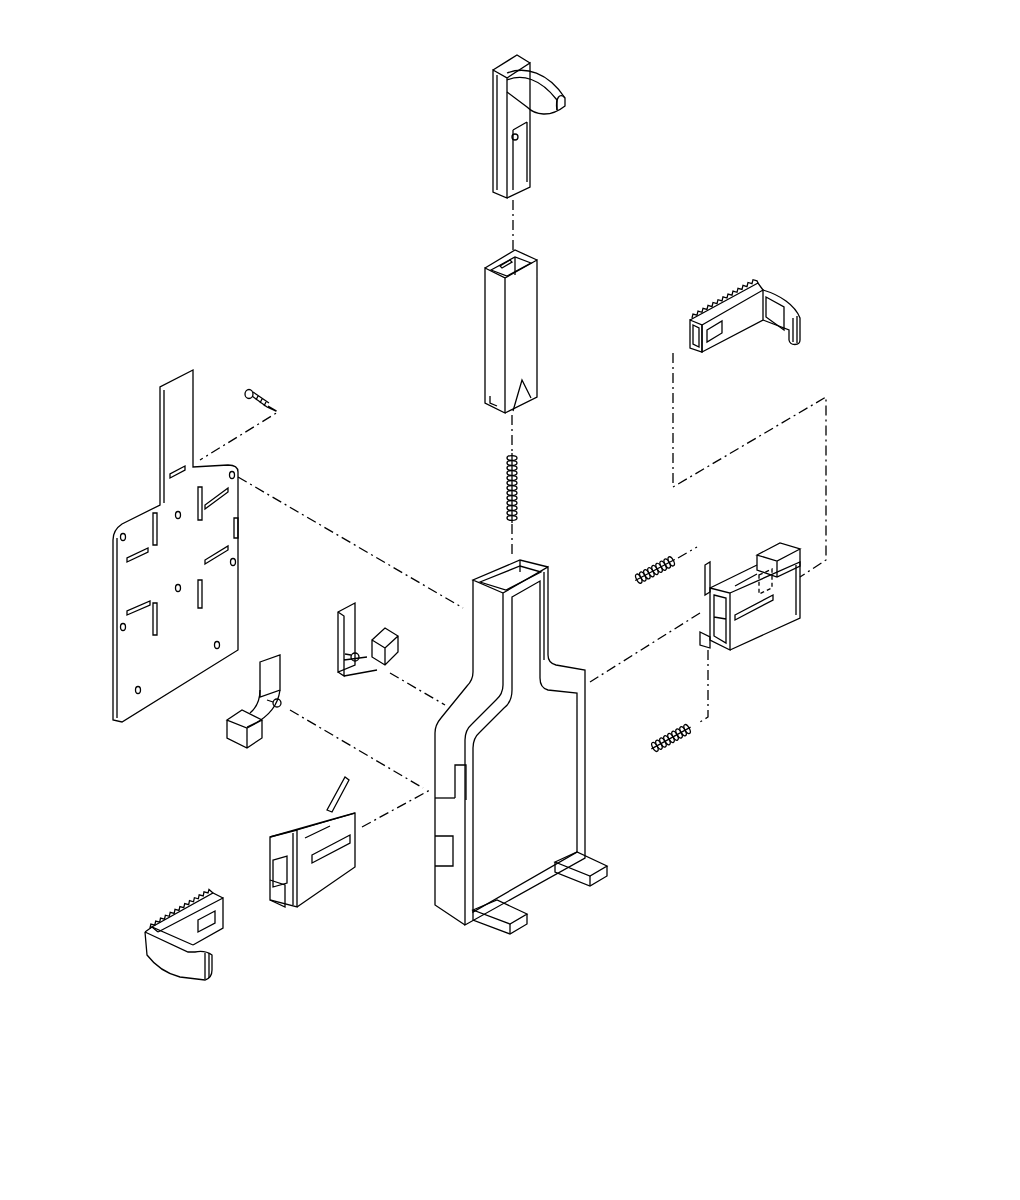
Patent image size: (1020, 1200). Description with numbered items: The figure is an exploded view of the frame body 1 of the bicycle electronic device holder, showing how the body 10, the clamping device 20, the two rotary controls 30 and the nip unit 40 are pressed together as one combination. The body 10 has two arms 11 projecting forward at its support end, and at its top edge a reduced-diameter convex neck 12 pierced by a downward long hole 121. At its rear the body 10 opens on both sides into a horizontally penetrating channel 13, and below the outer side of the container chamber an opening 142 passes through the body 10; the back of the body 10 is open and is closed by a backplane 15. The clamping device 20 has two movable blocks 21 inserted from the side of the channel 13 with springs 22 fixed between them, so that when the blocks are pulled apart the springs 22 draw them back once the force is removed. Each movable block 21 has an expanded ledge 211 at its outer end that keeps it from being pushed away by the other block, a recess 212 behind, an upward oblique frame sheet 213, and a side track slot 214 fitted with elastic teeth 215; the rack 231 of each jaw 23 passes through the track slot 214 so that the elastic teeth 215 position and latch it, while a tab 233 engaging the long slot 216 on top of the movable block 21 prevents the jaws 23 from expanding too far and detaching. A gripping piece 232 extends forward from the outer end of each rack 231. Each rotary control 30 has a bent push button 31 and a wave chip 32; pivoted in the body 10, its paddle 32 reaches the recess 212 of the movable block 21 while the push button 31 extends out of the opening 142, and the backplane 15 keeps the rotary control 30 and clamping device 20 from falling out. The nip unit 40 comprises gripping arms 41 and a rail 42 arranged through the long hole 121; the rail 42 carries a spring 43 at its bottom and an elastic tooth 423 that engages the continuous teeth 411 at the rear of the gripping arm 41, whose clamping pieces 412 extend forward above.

The frame body 1 is at (710, 150).
The body 10 is at (593, 777).
The arms 11 is at (607, 880).
The convex neck 12 is at (530, 645).
The long hole 121 is at (502, 568).
The channel 13 is at (455, 787).
The opening 142 is at (445, 845).
The backplane 15 is at (138, 507).
The clamping device 20 is at (137, 910).
The movable blocks 21 is at (780, 545).
The expanded ledge 211 is at (790, 618).
The recess 212 is at (748, 568).
The frame sheet 213 is at (708, 565).
The track slot 214 is at (703, 637).
The elastic teeth 215 is at (780, 583).
The long slot 216 is at (748, 618).
The springs 22 is at (648, 570).
The jaws 23 is at (765, 292).
The rack 231 is at (740, 296).
The gripping piece 232 is at (805, 330).
The tab 233 is at (728, 335).
The rotary control 30 is at (287, 687).
The push button 31 is at (400, 648).
The wave chip 32 is at (345, 612).
The nip unit 40 is at (472, 418).
The gripping arms 41 is at (532, 152).
The continuous teeth 411 is at (493, 127).
The clamping pieces 412 is at (545, 82).
The rail 42 is at (530, 335).
The elastic tooth 423 is at (505, 265).
The spring 43 is at (515, 468).